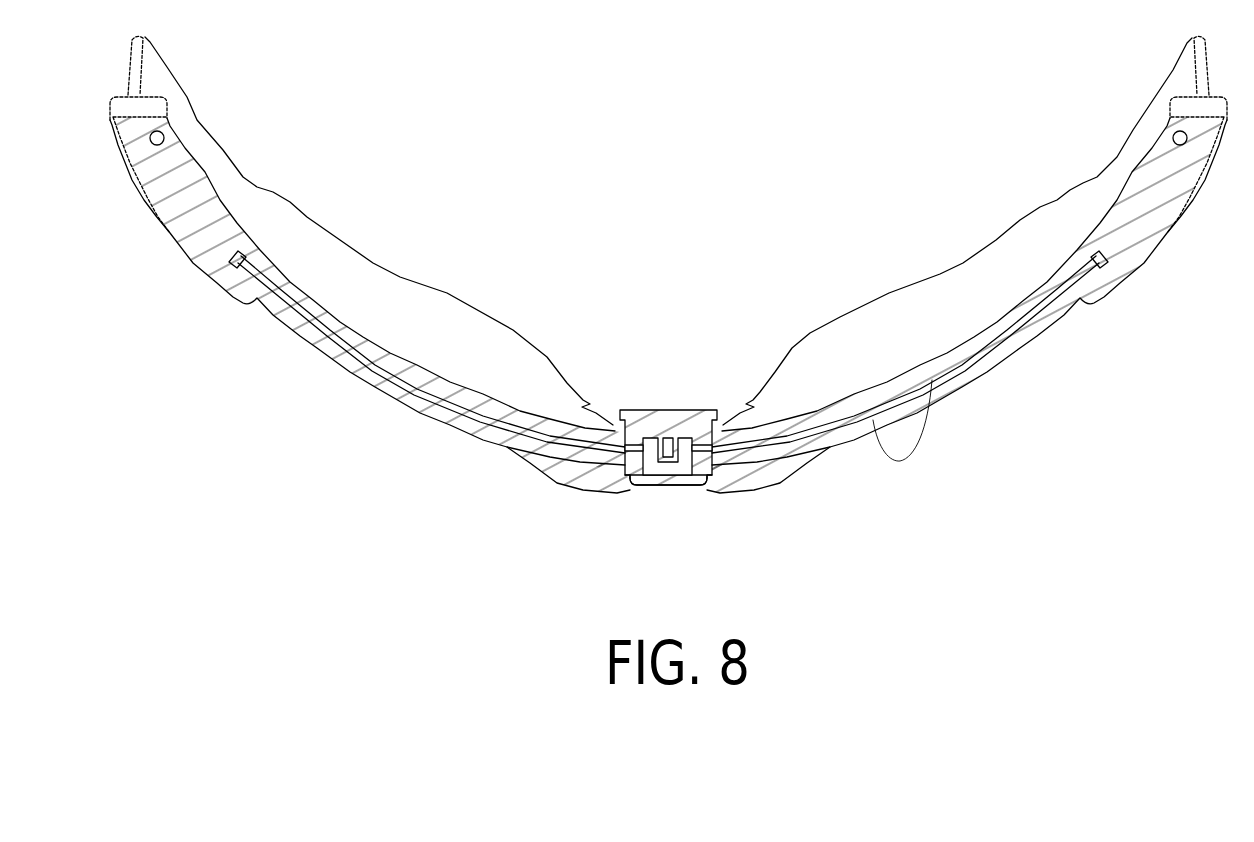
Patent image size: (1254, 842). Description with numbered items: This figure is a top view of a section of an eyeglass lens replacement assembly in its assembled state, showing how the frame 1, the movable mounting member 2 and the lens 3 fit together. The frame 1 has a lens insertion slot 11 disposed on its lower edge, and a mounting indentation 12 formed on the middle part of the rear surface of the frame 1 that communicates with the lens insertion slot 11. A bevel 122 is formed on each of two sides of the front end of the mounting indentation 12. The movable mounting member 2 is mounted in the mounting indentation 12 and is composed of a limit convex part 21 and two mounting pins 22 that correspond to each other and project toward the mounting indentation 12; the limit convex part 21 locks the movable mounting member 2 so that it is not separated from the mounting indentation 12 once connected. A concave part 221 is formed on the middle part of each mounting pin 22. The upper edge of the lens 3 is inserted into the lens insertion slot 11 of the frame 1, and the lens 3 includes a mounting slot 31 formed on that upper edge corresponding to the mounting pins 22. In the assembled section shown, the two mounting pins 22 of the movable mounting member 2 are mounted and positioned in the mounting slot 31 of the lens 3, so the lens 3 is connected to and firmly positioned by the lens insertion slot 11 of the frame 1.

The frame 1 is at (800, 423).
The lens insertion slot 11 is at (932, 380).
The mounting indentation 12 is at (668, 486).
The bevel 122 is at (688, 487).
The movable mounting member 2 is at (666, 446).
The limit convex part 21 is at (670, 440).
The mounting pins 22 is at (650, 486).
The concave part 221 is at (612, 426).
The lens 3 is at (953, 387).
The mounting slot 31 is at (699, 424).